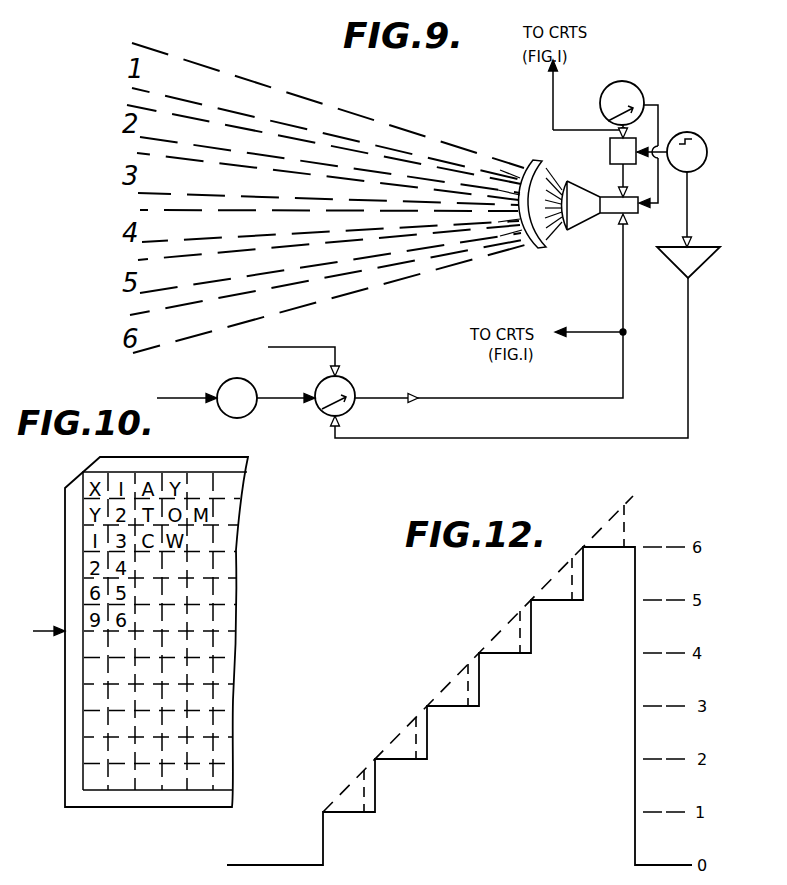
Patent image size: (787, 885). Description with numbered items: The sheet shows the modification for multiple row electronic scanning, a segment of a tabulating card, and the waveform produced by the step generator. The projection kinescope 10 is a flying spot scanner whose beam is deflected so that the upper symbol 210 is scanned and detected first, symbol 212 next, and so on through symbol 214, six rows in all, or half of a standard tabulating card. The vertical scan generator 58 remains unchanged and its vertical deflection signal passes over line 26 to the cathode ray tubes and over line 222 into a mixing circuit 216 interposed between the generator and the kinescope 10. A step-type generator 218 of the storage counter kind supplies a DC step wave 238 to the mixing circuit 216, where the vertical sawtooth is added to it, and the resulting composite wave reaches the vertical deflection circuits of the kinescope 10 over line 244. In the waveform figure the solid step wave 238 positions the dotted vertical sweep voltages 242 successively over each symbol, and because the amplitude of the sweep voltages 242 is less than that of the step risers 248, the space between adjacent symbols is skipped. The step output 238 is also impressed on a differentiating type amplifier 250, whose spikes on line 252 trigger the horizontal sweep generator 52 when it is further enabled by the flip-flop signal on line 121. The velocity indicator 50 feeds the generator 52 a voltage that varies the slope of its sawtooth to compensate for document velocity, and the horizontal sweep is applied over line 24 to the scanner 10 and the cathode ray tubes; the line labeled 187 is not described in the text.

In FIG. 9, the projection kinescope 10 is at (574, 227).
In FIG. 9, the horizontal sweep line 24 is at (622, 358).
In FIG. 9, the vertical sweep line 26 is at (553, 100).
In FIG. 9, the velocity indicator 50 is at (233, 379).
In FIG. 9, the horizontal sweep generator 52 is at (352, 386).
In FIG. 9, the vertical scan generator 58 is at (640, 90).
In FIG. 9, the flip-flop signal line 121 is at (338, 354).
In FIG. 9, the connecting line 187 is at (273, 400).
In FIG. 9, the upper symbol 210 is at (123, 70).
In FIG. 9, the second symbol 212 is at (119, 125).
In FIG. 9, the last symbol 214 is at (122, 336).
In FIG. 9, the mixing circuit 216 is at (610, 150).
In FIG. 9, the step-type generator 218 is at (707, 147).
In FIG. 9, the vertical deflection signal line 222 is at (633, 127).
In FIG. 12, the step wave 238 is at (450, 708).
In FIG. 12, the vertical sweep voltages 242 is at (504, 615).
In FIG. 9, the composite wave line 244 is at (618, 176).
In FIG. 12, the step risers 248 is at (477, 653).
In FIG. 9, the differentiating type amplifier 250 is at (716, 261).
In FIG. 9, the trigger line 252 is at (689, 328).